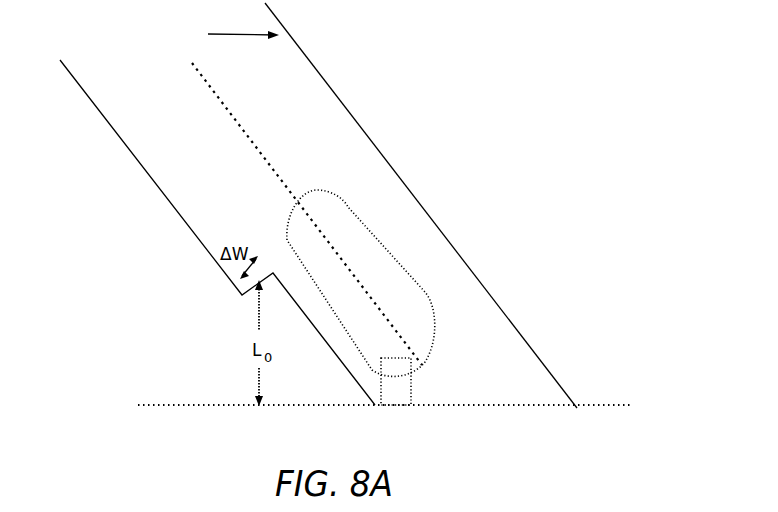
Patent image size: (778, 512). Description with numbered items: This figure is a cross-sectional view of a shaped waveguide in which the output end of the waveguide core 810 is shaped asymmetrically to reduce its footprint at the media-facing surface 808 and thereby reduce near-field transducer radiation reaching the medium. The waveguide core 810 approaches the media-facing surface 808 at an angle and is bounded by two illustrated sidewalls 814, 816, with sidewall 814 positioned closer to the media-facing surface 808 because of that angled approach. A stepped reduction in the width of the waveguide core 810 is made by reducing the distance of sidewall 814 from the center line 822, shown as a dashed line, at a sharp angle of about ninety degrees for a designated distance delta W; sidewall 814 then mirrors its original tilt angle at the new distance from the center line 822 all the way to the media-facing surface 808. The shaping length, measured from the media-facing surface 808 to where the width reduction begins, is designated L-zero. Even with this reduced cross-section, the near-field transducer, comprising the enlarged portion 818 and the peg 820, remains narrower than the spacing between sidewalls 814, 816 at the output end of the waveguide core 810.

The media-facing surface 808 is at (612, 405).
The waveguide core 810 is at (358, 126).
The sidewall 814 is at (93, 100).
The sidewall 816 is at (231, 26).
The enlarged portion 818 is at (354, 279).
The peg 820 is at (413, 384).
The center line 822 is at (236, 118).